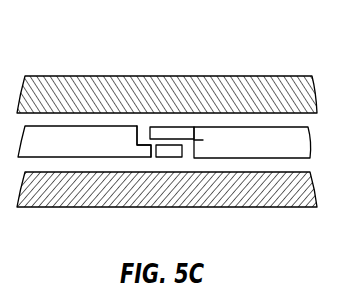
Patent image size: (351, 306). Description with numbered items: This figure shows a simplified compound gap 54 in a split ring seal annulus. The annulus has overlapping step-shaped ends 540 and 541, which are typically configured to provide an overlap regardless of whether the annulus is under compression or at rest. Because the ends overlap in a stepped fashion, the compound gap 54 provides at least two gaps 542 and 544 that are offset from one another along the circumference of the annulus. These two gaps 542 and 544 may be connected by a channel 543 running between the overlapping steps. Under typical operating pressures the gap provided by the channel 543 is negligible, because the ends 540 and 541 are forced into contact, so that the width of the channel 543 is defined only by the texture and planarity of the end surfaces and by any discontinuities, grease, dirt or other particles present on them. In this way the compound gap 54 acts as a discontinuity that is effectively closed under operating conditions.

The compound gap 54 is at (155, 96).
The step-shaped end 540 is at (169, 158).
The step-shaped end 541 is at (172, 131).
The gap 542 is at (142, 116).
The channel 543 is at (155, 144).
The gap 544 is at (193, 134).